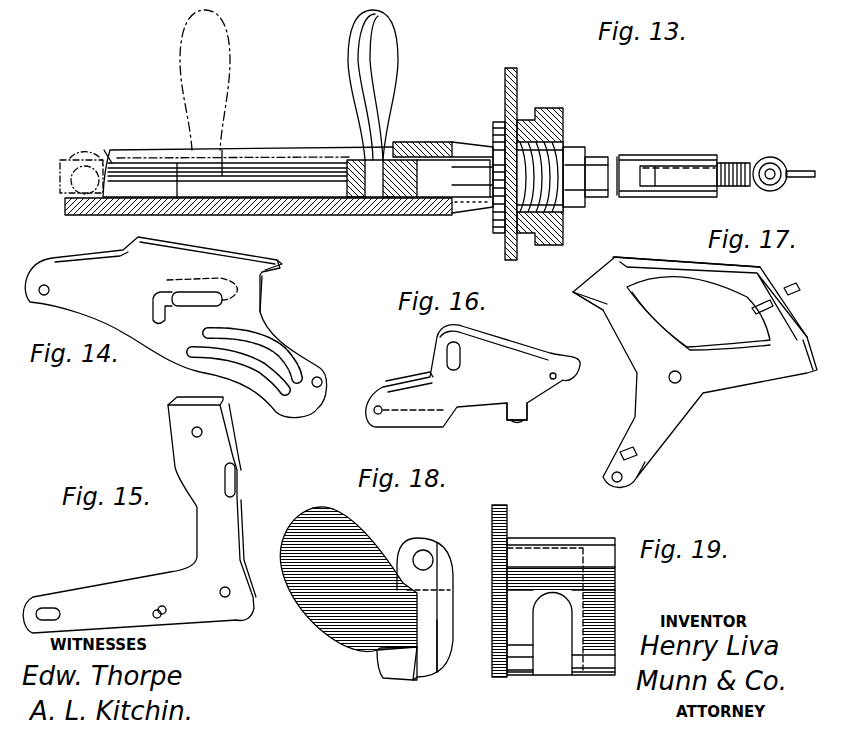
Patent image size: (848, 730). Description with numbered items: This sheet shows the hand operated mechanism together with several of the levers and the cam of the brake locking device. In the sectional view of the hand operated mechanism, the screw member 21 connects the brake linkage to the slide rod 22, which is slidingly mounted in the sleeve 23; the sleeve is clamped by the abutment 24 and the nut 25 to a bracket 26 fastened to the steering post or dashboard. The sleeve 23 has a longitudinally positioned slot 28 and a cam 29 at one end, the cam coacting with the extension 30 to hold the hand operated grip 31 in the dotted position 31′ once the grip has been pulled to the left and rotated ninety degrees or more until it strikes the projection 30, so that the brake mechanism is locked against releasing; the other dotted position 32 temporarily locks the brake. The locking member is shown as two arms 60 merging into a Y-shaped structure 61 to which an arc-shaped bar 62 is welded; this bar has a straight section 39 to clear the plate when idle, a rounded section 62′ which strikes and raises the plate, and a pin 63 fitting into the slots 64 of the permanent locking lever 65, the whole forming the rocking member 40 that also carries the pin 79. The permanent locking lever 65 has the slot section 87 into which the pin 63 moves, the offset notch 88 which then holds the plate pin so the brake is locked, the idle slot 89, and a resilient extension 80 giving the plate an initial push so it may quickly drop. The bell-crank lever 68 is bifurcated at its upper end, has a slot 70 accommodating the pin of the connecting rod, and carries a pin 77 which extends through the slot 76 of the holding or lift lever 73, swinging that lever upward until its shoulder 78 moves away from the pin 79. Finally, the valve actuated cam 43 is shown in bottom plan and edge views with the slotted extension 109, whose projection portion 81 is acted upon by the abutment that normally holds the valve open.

In FIG. 13, the screw member 21 is at (737, 160).
In FIG. 13, the slide rod 22 is at (640, 158).
In FIG. 13, the sleeve 23 is at (405, 215).
In FIG. 13, the abutment 24 is at (493, 133).
In FIG. 13, the nut 25 is at (560, 225).
In FIG. 13, the bracket 26 is at (505, 253).
In FIG. 13, the longitudinally positioned slot 28 is at (292, 150).
In FIG. 13, the cam 29 is at (106, 150).
In FIG. 13, the extension 30 is at (65, 208).
In FIG. 13, the hand operated member or grip 31 is at (398, 58).
In FIG. 13, the dotted position of grip 31′ is at (72, 157).
In FIG. 13, the dotted position of grip 32 is at (229, 90).
In FIG. 17, the straight section 39 is at (662, 258).
In FIG. 17, the rocking member 40 is at (573, 295).
In FIG. 18, the valve actuated cam 43 is at (365, 540).
In FIG. 19, the valve actuated cam 43 is at (507, 527).
In FIG. 17, the arms 60 is at (640, 478).
In FIG. 17, the Y-shaped structure 61 is at (625, 327).
In FIG. 17, the arc-shaped bar 62 is at (725, 282).
In FIG. 17, the rounded section 62′ is at (783, 284).
In FIG. 17, the pin 63 is at (753, 311).
In FIG. 14, the slots 64 is at (290, 357).
In FIG. 14, the permanent locking lever 65 is at (262, 296).
In FIG. 15, the bell-crank lever 68 is at (200, 530).
In FIG. 15, the slot 70 is at (48, 608).
In FIG. 16, the lift lever 73 is at (540, 388).
In FIG. 16, the slot 76 is at (447, 352).
In FIG. 15, the pin 77 is at (153, 612).
In FIG. 16, the shoulder 78 is at (514, 420).
In FIG. 17, the pin 79 is at (620, 455).
In FIG. 14, the resilient extension 80 is at (280, 264).
In FIG. 18, the projection portion 81 is at (378, 660).
In FIG. 14, the section of slot 87 is at (204, 350).
In FIG. 14, the offset slot or notch 88 is at (153, 307).
In FIG. 14, the slot 89 is at (185, 292).
In FIG. 18, the slotted extension 109 is at (445, 560).
In FIG. 19, the slotted extension 109 is at (598, 548).